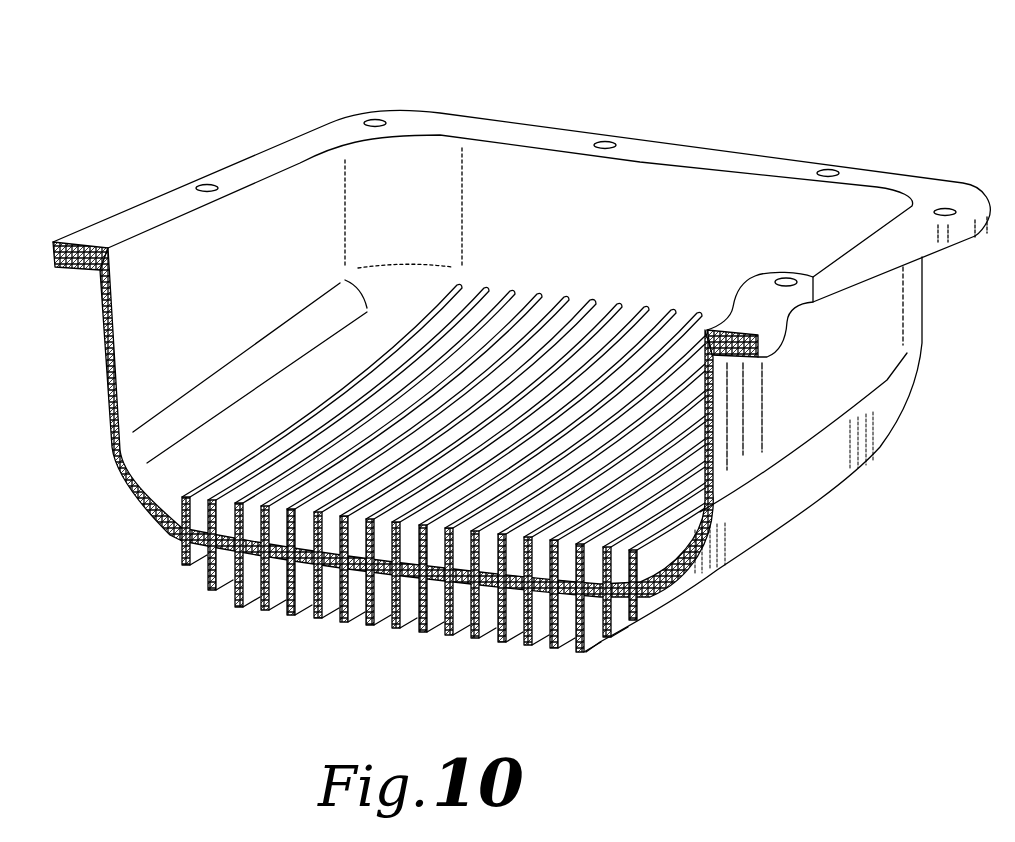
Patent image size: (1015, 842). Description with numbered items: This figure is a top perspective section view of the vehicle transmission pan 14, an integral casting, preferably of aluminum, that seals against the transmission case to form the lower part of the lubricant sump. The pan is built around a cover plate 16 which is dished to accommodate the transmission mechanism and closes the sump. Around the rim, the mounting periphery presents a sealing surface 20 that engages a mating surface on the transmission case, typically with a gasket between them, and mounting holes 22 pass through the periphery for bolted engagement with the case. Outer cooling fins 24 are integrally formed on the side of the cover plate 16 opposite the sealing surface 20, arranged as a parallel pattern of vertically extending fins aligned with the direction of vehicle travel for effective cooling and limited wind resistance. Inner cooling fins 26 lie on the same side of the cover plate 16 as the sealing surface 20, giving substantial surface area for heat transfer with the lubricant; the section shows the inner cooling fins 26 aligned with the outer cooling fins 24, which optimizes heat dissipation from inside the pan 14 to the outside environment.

The vehicle transmission pan 14 is at (800, 607).
The cover plate 16 is at (710, 212).
The sealing surface 20 is at (930, 196).
The mounting holes 22 is at (378, 118).
The outer cooling fins 24 is at (267, 603).
The inner cooling fins 26 is at (337, 393).